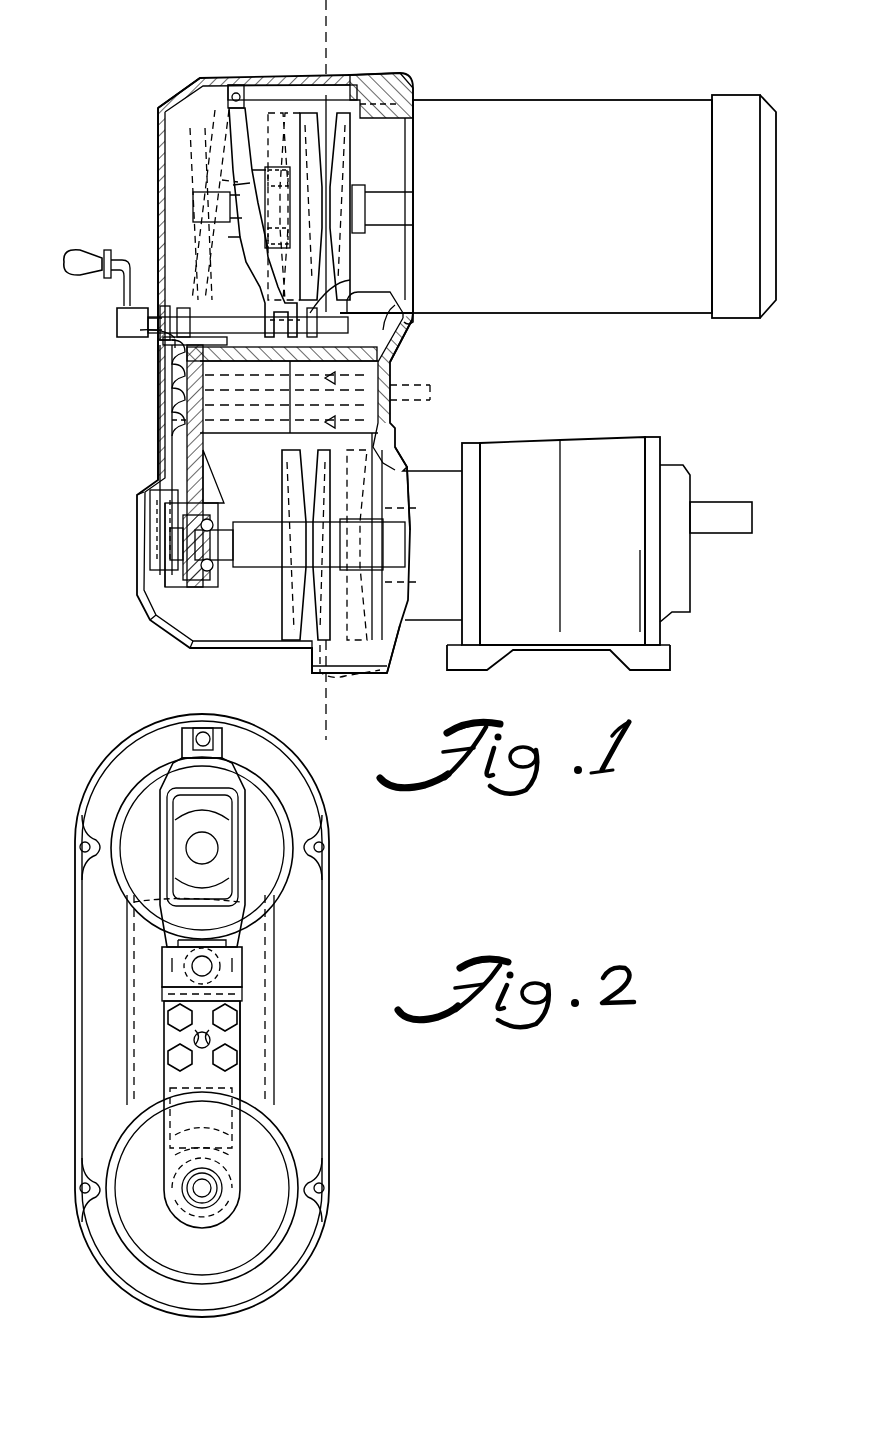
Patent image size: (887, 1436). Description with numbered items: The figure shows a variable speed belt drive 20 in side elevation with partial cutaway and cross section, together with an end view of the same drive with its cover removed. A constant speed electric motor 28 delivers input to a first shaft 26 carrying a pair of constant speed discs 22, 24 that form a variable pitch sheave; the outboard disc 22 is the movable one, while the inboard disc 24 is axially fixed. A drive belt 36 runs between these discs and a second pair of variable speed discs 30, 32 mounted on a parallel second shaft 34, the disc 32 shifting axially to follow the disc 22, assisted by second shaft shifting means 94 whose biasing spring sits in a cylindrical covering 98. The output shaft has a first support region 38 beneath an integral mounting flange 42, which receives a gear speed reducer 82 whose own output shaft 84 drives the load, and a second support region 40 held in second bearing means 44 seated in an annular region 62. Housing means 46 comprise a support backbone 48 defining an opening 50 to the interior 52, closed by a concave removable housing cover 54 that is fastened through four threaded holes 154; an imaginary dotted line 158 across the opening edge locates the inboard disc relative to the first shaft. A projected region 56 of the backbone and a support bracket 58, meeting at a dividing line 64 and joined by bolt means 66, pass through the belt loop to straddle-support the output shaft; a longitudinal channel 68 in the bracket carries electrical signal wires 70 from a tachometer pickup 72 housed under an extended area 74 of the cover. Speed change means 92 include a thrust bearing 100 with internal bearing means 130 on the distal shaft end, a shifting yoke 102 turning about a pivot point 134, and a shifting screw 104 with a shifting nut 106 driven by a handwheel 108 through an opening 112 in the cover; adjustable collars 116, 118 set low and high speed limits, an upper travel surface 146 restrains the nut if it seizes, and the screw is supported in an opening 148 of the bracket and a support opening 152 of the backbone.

In FIG. 1, the belt drive 20 is at (460, 34).
In FIG. 1, the constant speed disc 22 is at (322, 85).
In FIG. 2, the constant speed disc 22 is at (280, 775).
In FIG. 1, the constant speed disc 24 is at (360, 70).
In FIG. 1, the first shaft 26 is at (395, 200).
In FIG. 1, the constant speed electric motor 28 is at (578, 212).
In FIG. 1, the variable speed disc 30 is at (278, 650).
In FIG. 2, the variable speed disc 30 is at (125, 1258).
In FIG. 1, the variable speed disc 32 is at (305, 652).
In FIG. 1, the second shaft 34 is at (408, 570).
In FIG. 2, the drive belt 36 is at (125, 990).
In FIG. 1, the first support region 38 is at (430, 612).
In FIG. 1, the second support region 40 is at (236, 600).
In FIG. 1, the integral mounting flange 42 is at (398, 455).
In FIG. 1, the second bearing means 44 is at (215, 505).
In FIG. 2, the second bearing means 44 is at (190, 1190).
In FIG. 1, the housing means 46 is at (442, 74).
In FIG. 2, the housing means 46 is at (350, 1122).
In FIG. 1, the support backbone 48 is at (400, 345).
In FIG. 1, the opening 50 is at (334, 75).
In FIG. 2, the opening 50 is at (330, 945).
In FIG. 1, the interior 52 is at (380, 270).
In FIG. 2, the interior 52 is at (304, 1009).
In FIG. 1, the removable housing cover 54 is at (158, 135).
In FIG. 1, the projected region 56 is at (322, 420).
In FIG. 1, the support bracket 58 is at (214, 316).
In FIG. 2, the support bracket 58 is at (170, 1110).
In FIG. 1, the annular region 62 is at (218, 580).
In FIG. 2, the annular region 62 is at (190, 1205).
In FIG. 1, the dividing line 64 is at (282, 425).
In FIG. 1, the bolt means 66 is at (160, 410).
In FIG. 2, the bolt means 66 is at (168, 1047).
In FIG. 2, the longitudinal channel 68 is at (208, 1065).
In FIG. 1, the electrical signal wires 70 is at (400, 392).
In FIG. 1, the tachometer pickup 72 is at (135, 585).
In FIG. 1, the extended area 74 is at (150, 535).
In FIG. 1, the gear speed reducer 82 is at (608, 548).
In FIG. 1, the output shaft 84 is at (740, 540).
In FIG. 1, the speed change means 92 is at (180, 100).
In FIG. 1, the second shaft shifting means 94 is at (400, 490).
In FIG. 1, the cylindrical covering 98 is at (405, 520).
In FIG. 1, the thrust bearing 100 is at (266, 298).
In FIG. 2, the thrust bearing 100 is at (222, 868).
In FIG. 1, the shifting yoke 102 is at (225, 190).
In FIG. 2, the shifting yoke 102 is at (140, 905).
In FIG. 1, the shifting screw 104 is at (400, 298).
In FIG. 2, the shifting screw 104 is at (162, 958).
In FIG. 1, the shifting nut 106 is at (300, 398).
In FIG. 2, the shifting nut 106 is at (245, 975).
In FIG. 1, the handwheel 108 is at (100, 290).
In FIG. 1, the opening 112 is at (115, 318).
In FIG. 1, the adjustable collar 116 is at (160, 350).
In FIG. 1, the adjustable collar 118 is at (348, 290).
In FIG. 1, the bearing means 130 is at (218, 148).
In FIG. 1, the pivot point 134 is at (222, 80).
In FIG. 2, the pivot point 134 is at (182, 745).
In FIG. 1, the upper travel surface 146 is at (250, 366).
In FIG. 1, the opening 148 is at (130, 345).
In FIG. 2, the opening 148 is at (216, 945).
In FIG. 1, the support opening 152 is at (414, 330).
In FIG. 2, the threaded holes 154 is at (75, 840).
In FIG. 1, the imaginary dotted line 158 is at (318, 14).